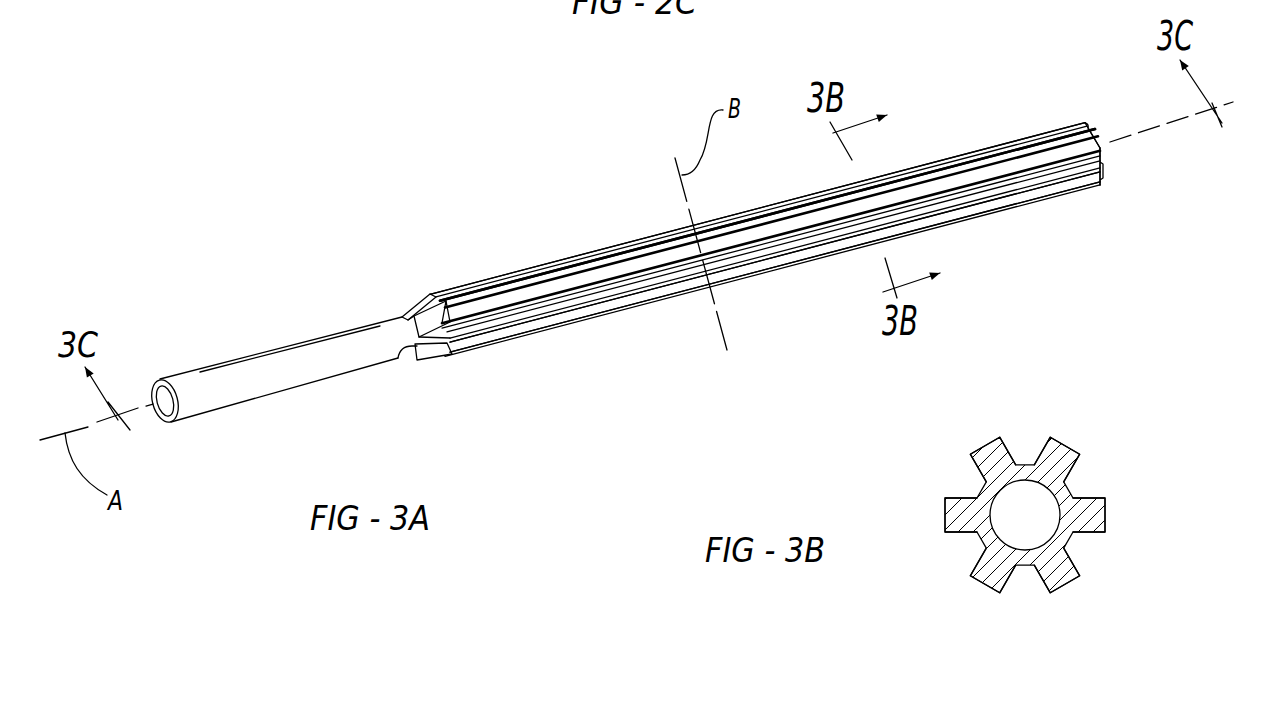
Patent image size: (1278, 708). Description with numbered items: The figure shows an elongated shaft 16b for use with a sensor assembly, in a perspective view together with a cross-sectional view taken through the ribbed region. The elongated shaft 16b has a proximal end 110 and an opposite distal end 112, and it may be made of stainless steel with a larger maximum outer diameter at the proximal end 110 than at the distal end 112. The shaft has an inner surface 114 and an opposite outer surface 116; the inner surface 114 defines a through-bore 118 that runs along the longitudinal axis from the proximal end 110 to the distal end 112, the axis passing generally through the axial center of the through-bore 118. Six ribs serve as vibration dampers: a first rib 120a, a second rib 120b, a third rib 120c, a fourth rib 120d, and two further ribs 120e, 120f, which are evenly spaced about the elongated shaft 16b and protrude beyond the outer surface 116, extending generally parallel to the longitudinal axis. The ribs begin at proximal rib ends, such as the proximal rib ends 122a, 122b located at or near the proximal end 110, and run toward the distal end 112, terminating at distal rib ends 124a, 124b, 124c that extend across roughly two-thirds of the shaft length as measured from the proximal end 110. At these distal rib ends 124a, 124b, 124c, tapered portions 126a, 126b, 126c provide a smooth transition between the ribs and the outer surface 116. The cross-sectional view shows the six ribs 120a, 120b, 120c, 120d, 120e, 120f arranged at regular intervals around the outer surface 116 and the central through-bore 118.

In FIG. 3A, the elongated shaft 16b is at (342, 151).
In FIG. 3B, the elongated shaft 16b is at (904, 442).
In FIG. 3A, the proximal end 110 is at (1100, 158).
In FIG. 3A, the distal end 112 is at (178, 402).
In FIG. 3A, the inner surface 114 is at (152, 391).
In FIG. 3A, the outer surface 116 is at (273, 360).
In FIG. 3B, the outer surface 116 is at (1100, 546).
In FIG. 3A, the through-bore 118 is at (153, 423).
In FIG. 3A, the first rib 120a is at (993, 207).
In FIG. 3B, the first rib 120a is at (1105, 502).
In FIG. 3A, the second rib 120b is at (990, 177).
In FIG. 3B, the second rib 120b is at (1068, 442).
In FIG. 3A, the third rib 120c is at (410, 313).
In FIG. 3B, the third rib 120c is at (985, 447).
In FIG. 3B, the fourth rib 120d is at (945, 512).
In FIG. 3B, the rib 120e is at (993, 588).
In FIG. 3A, the rib 120f is at (950, 228).
In FIG. 3B, the rib 120f is at (1077, 590).
In FIG. 3A, the proximal rib end 122a is at (1100, 180).
In FIG. 3A, the proximal rib end 122b is at (1097, 143).
In FIG. 3A, the distal rib end 124a is at (405, 352).
In FIG. 3A, the distal rib end 124b is at (420, 318).
In FIG. 3A, the distal rib end 124c is at (403, 316).
In FIG. 3A, the tapered portion 126a is at (448, 362).
In FIG. 3A, the tapered portion 126b is at (441, 322).
In FIG. 3A, the tapered portion 126c is at (405, 316).